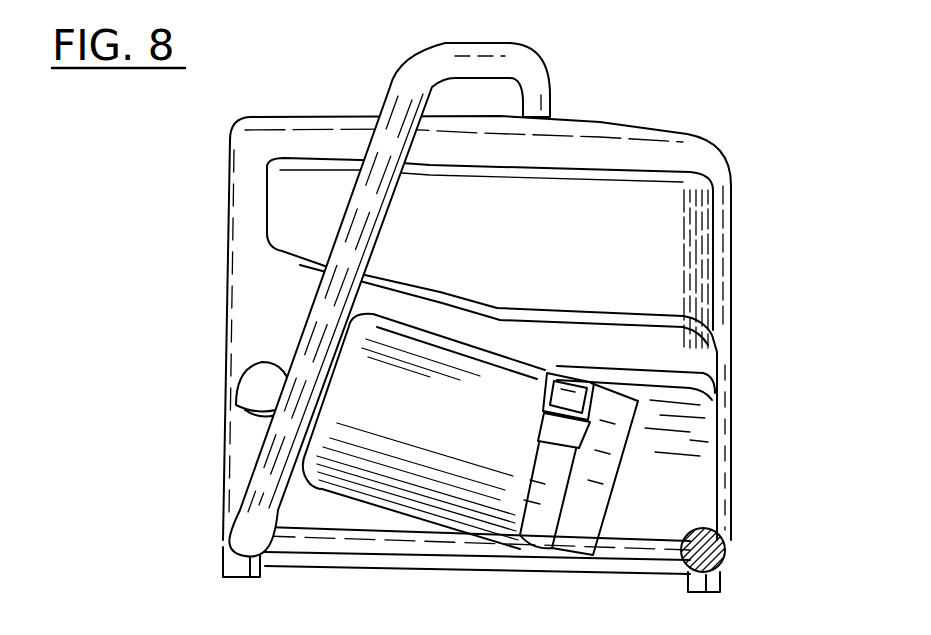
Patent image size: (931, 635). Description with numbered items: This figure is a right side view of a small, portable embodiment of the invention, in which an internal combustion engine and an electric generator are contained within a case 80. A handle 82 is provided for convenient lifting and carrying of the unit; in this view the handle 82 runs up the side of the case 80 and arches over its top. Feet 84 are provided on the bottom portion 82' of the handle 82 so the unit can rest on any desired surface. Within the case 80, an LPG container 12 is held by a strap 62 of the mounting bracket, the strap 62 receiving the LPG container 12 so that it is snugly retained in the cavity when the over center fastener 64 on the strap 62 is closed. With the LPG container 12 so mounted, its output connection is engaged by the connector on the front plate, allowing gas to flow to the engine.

The LPG container 12 is at (466, 428).
The strap 62 is at (530, 548).
The over center fastener 64 is at (577, 378).
The case 80 is at (655, 222).
The handle 82 is at (419, 283).
The bottom portion of handle 82' is at (477, 572).
The feet 84 is at (232, 578).